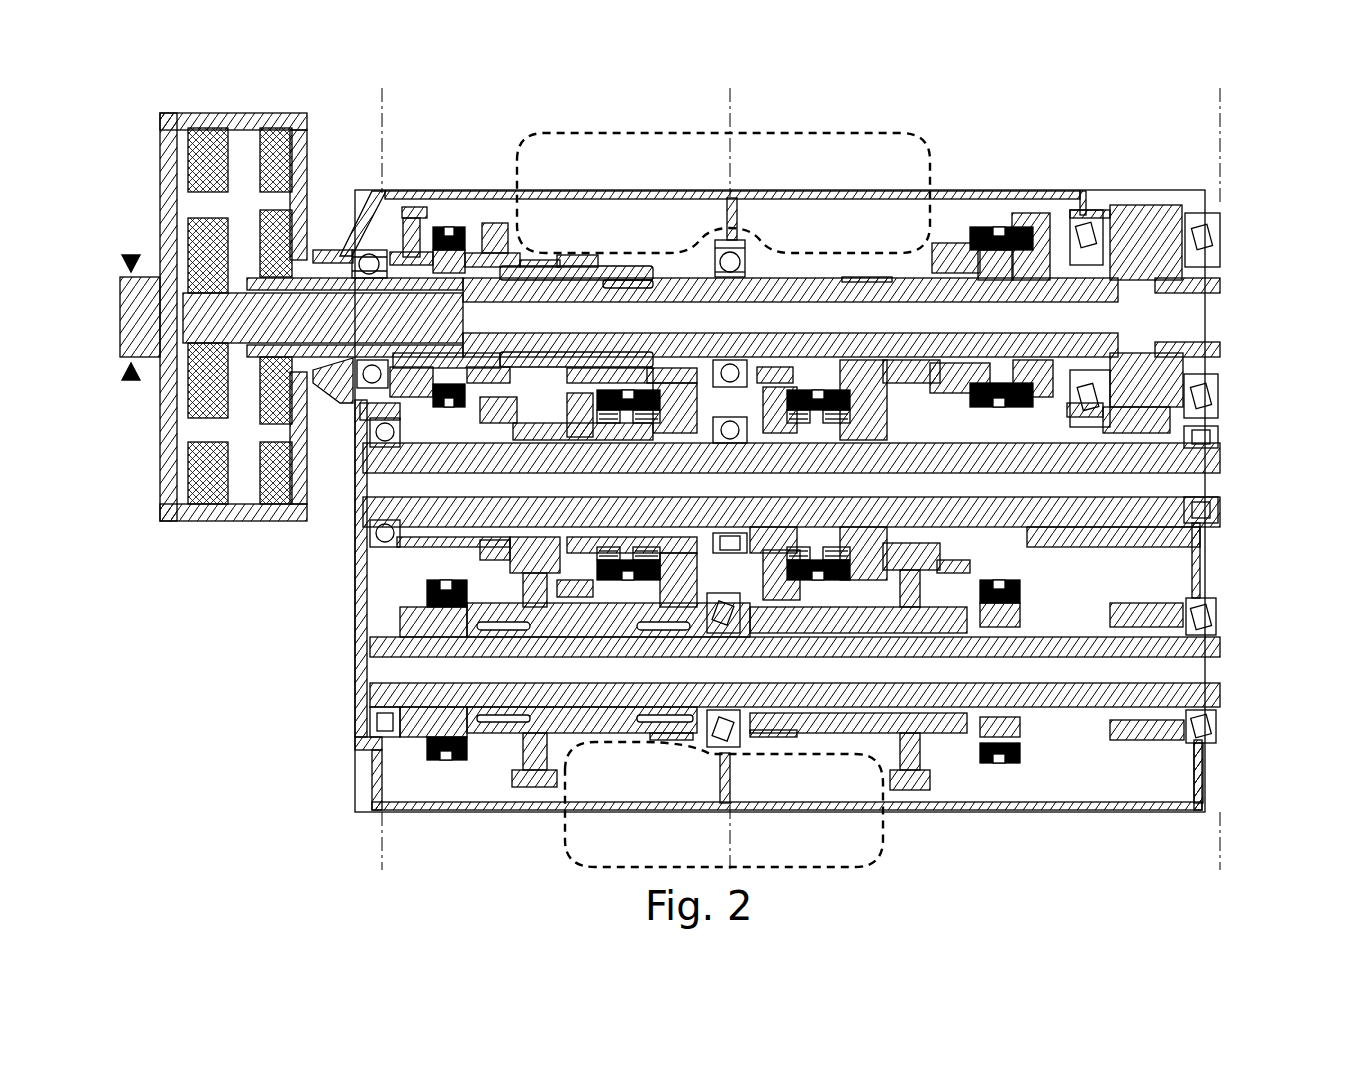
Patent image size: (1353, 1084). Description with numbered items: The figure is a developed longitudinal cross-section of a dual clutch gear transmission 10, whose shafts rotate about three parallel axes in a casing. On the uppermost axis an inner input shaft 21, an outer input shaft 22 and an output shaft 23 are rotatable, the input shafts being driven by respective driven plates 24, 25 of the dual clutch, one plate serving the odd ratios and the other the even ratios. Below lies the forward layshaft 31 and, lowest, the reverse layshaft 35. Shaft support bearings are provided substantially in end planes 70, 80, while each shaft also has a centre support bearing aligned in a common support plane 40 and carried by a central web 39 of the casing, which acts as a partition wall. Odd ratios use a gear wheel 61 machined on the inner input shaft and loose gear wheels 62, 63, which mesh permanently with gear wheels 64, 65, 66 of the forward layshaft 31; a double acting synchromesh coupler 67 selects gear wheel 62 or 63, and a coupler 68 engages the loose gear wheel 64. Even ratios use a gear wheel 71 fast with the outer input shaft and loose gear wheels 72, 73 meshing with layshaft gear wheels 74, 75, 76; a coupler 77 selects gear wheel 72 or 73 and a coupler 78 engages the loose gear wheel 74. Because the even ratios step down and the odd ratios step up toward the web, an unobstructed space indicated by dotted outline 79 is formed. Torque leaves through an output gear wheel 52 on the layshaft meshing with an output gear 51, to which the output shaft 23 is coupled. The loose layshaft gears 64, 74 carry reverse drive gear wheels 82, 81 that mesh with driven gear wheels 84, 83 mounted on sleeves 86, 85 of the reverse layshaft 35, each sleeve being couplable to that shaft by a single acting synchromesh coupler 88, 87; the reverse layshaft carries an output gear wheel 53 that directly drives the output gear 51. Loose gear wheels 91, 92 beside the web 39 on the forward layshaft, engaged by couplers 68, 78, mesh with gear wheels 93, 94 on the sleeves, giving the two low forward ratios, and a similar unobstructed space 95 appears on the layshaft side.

The gear transmission 10 is at (899, 121).
The inner input shaft 21 is at (803, 290).
The outer input shaft 22 is at (630, 267).
The output shaft 23 is at (1212, 282).
The driven plate 24 is at (203, 128).
The driven plate 25 is at (278, 128).
The forward layshaft 31 is at (1214, 461).
The reverse layshaft 35 is at (380, 690).
The central web 39 is at (733, 232).
The common support plane 40 is at (720, 100).
The output gear 51 is at (1150, 215).
The output gear wheel 52 is at (1147, 538).
The output gear wheel 53 is at (1147, 738).
The gear wheel 61 is at (865, 277).
The gear wheel 62 is at (945, 243).
The gear wheel 63 is at (1043, 215).
The gear wheel 64 is at (877, 378).
The gear wheel 65 is at (963, 570).
The gear wheel 66 is at (1043, 547).
The double acting synchromesh coupler 67 is at (1000, 227).
The double acting synchromesh coupler 68 is at (818, 403).
The end plane 70 is at (392, 100).
The gear wheel 71 is at (575, 255).
The gear wheel 72 is at (492, 223).
The gear wheel 73 is at (413, 207).
The gear wheel 74 is at (575, 385).
The gear wheel 75 is at (480, 557).
The gear wheel 76 is at (413, 420).
The double acting synchromesh coupler 77 is at (450, 227).
The double acting synchromesh coupler 78 is at (630, 403).
The dotted outline 79 is at (800, 133).
The end plane 80 is at (1230, 100).
The reverse drive gear wheel 81 is at (522, 566).
The reverse drive gear wheel 82 is at (915, 560).
The driven gear wheel 83 is at (532, 783).
The driven gear wheel 84 is at (913, 783).
The sleeve 85 is at (583, 722).
The sleeve 86 is at (865, 725).
The single acting synchromesh coupler 87 is at (447, 752).
The single acting synchromesh coupler 88 is at (998, 752).
The loose gear wheel 91 is at (660, 598).
The loose gear wheel 92 is at (785, 598).
The gear wheel 93 is at (665, 740).
The gear wheel 94 is at (780, 733).
The unobstructed space 95 is at (578, 866).